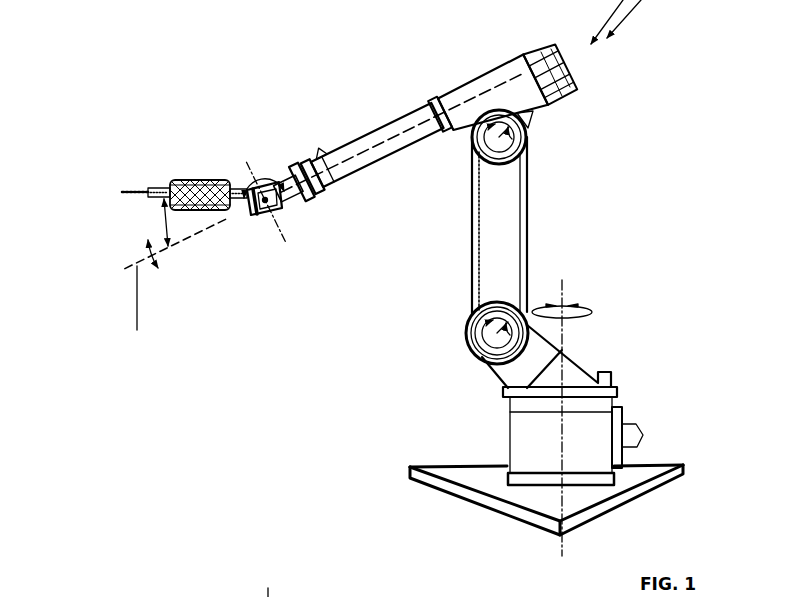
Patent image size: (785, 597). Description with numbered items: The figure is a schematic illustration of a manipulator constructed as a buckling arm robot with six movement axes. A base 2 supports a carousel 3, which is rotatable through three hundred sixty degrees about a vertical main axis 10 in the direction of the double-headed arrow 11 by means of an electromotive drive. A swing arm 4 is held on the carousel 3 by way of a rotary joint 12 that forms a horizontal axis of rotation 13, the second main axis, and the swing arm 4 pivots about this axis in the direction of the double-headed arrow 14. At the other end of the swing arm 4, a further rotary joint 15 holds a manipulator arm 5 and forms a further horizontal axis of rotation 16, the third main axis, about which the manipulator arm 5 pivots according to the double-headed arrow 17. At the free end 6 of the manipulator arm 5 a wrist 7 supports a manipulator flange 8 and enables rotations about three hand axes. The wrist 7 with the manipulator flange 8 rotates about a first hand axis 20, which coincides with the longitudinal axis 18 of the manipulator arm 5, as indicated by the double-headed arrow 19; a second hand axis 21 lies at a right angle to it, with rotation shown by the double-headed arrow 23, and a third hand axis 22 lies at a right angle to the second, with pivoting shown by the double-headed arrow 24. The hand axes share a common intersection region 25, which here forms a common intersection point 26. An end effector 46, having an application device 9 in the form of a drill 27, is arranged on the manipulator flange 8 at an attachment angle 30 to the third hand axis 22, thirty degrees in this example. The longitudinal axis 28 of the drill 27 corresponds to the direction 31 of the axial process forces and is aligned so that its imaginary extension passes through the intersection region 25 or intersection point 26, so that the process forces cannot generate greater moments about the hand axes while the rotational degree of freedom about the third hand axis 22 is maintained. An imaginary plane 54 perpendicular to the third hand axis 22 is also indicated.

The base 2 is at (648, 470).
The carousel 3 is at (586, 447).
The swing arm 4 is at (508, 220).
The manipulator arm 5 is at (377, 140).
The free end 6 is at (320, 180).
The wrist 7 is at (281, 172).
The manipulator flange 8 is at (248, 220).
The application device 9 is at (188, 182).
The vertical main axis 10 is at (565, 283).
The double-headed arrow 11 is at (593, 310).
The rotary joint 12 is at (472, 320).
The horizontal axis of rotation 13 is at (498, 333).
The double-headed arrow 14 is at (472, 350).
The rotary joint 15 is at (530, 128).
The horizontal axis of rotation 16 is at (480, 160).
The double-headed arrow 17 is at (530, 142).
The longitudinal axis 18 is at (422, 125).
The double-headed arrow 19 is at (336, 180).
The first hand axis 20 is at (345, 158).
The second hand axis 21 is at (282, 165).
The third hand axis 22 is at (137, 311).
The double-headed arrow 23 is at (263, 178).
The double-headed arrow 24 is at (158, 270).
The intersection region 25 is at (257, 218).
The intersection point 26 is at (273, 212).
The drill 27 is at (172, 188).
The longitudinal axis 28 is at (133, 191).
The attachment angle 30 is at (160, 225).
The direction 31 is at (215, 187).
The end effector 46 is at (198, 233).
The imaginary plane 54 is at (262, 595).